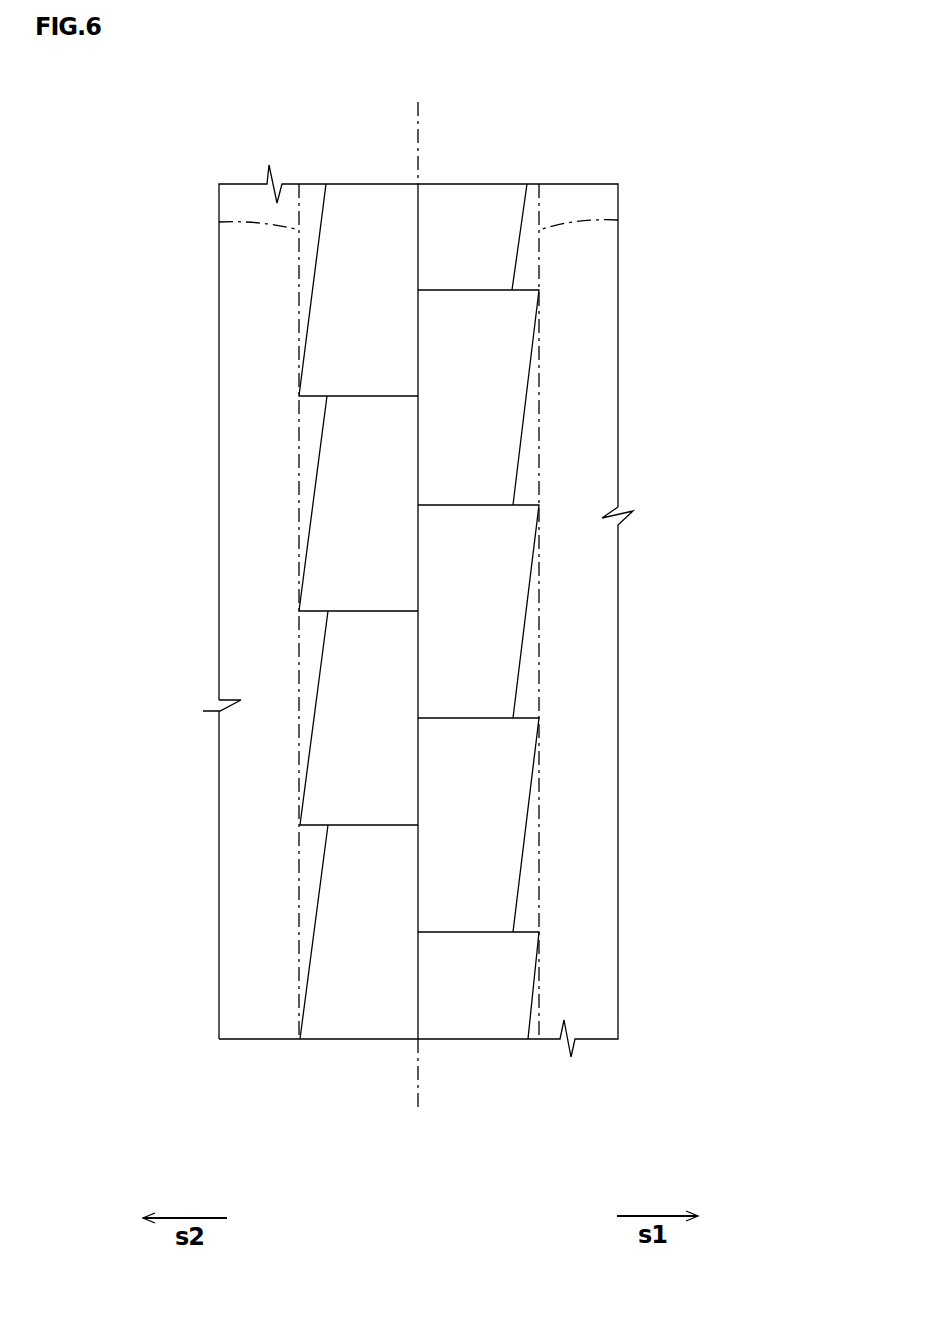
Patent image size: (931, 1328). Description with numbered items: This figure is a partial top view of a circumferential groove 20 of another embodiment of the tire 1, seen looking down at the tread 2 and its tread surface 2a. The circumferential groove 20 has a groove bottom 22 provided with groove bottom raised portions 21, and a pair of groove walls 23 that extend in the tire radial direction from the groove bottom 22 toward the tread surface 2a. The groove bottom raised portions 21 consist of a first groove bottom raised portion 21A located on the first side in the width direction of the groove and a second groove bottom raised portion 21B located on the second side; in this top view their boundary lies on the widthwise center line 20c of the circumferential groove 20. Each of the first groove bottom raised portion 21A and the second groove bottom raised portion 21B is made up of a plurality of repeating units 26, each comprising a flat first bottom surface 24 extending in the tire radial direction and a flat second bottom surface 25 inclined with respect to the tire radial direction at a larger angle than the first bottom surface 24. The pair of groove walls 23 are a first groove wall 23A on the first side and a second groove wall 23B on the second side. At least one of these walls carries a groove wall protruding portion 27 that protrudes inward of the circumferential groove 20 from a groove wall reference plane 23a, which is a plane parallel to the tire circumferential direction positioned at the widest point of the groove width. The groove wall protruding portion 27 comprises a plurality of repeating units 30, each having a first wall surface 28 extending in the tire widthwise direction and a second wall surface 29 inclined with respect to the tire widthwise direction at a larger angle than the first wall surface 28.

The tire 1 is at (632, 112).
The tread 2 is at (547, 143).
The tread surface 2a is at (585, 317).
The circumferential groove 20 is at (470, 163).
The widthwise center line 20c is at (417, 593).
The groove bottom raised portions 21 is at (735, 530).
The first groove bottom raised portion 21A is at (467, 655).
The second groove bottom raised portion 21B is at (375, 697).
The groove bottom 22 is at (369, 228).
The groove walls 23 is at (477, 1157).
The first groove wall 23A is at (530, 1008).
The second groove wall 23B is at (310, 970).
The groove wall reference plane 23a is at (219, 222).
The first bottom surface 24 is at (478, 500).
The second bottom surface 25 is at (453, 547).
The repeating units 26 is at (712, 328).
The groove wall protruding portion 27 is at (525, 482).
The first wall surface 28 is at (528, 720).
The second wall surface 29 is at (517, 673).
The repeating units 30 is at (712, 738).